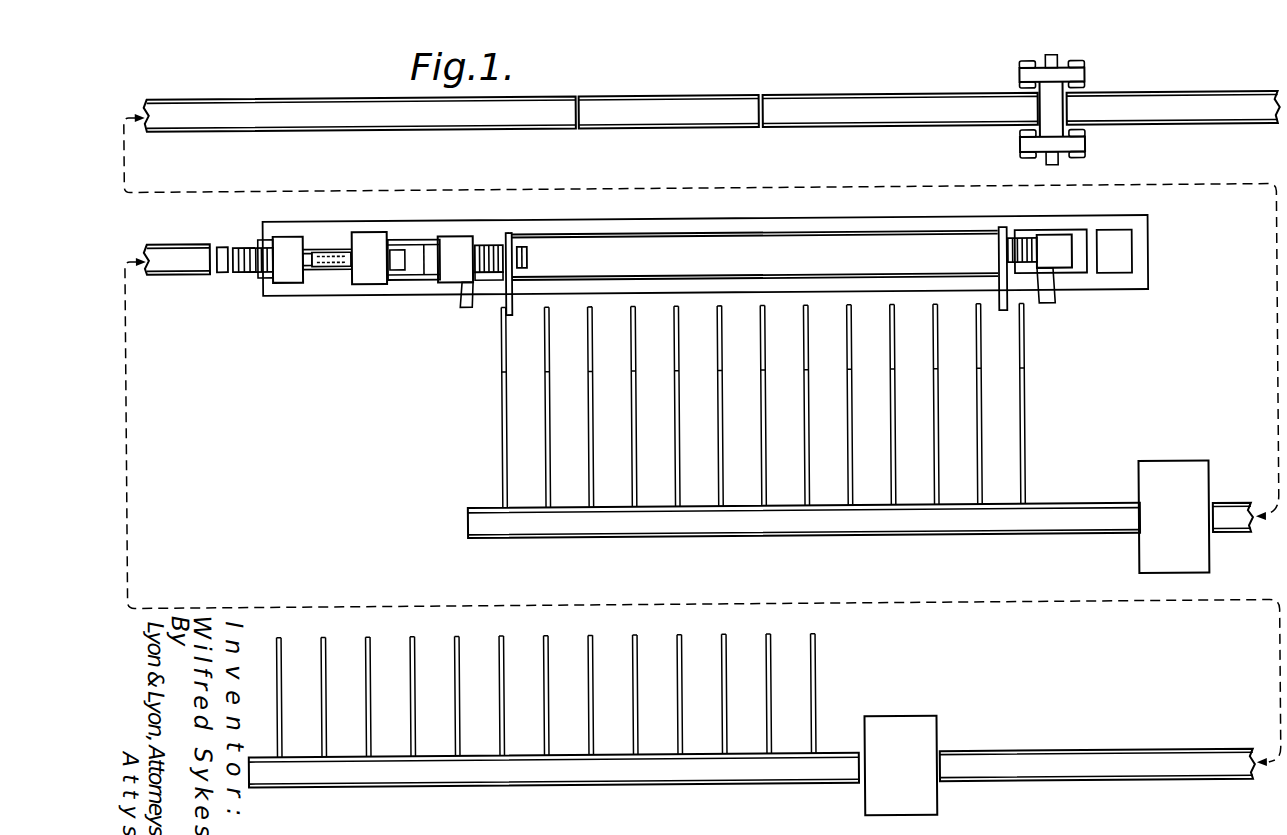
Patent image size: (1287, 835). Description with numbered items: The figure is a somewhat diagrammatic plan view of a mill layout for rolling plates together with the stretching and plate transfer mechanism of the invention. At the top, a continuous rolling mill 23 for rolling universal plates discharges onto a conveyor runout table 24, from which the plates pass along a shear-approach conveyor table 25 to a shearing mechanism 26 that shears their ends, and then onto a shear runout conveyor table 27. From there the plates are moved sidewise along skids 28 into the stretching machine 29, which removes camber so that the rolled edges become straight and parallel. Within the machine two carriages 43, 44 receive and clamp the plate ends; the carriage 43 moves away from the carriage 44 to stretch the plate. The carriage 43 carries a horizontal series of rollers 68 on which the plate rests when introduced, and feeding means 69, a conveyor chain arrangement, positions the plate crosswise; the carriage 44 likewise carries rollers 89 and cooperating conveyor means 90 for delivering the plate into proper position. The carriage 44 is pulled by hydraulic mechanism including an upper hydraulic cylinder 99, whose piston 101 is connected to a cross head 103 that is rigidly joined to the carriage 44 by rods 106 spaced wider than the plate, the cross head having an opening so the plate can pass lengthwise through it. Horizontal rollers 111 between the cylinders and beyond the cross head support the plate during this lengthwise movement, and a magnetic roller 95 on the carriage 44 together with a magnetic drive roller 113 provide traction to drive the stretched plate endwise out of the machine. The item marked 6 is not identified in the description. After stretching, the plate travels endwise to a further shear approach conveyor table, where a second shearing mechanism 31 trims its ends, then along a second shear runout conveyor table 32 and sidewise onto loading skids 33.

The continuous rolling mill 23 is at (1022, 77).
The conveyor runout table 24 is at (700, 99).
The shear-approach conveyor table 25 is at (534, 99).
The shearing mechanism 26 is at (1180, 479).
The shear runout conveyor table 27 is at (1043, 529).
The skids 28 is at (1001, 433).
The stretching machine 29 is at (833, 248).
The shearing mechanism 31 is at (936, 724).
The second shear runout conveyor table 32 is at (823, 756).
The loading skids 33 is at (784, 677).
The carriage 43 is at (1061, 266).
The carriage 44 is at (458, 270).
The plate 6 is at (998, 253).
The rollers 68 is at (1021, 251).
The feeding means 69 is at (1005, 303).
The rollers 89 is at (492, 243).
The delivery means 90 is at (509, 304).
The magnetic roller 95 is at (531, 257).
The upper hydraulic cylinder 99 is at (330, 272).
The piston 101 is at (313, 259).
The cross head 103 is at (288, 247).
The rods 106 is at (351, 283).
The horizontal rollers 111 is at (246, 271).
The magnetic drive roller 113 is at (222, 244).